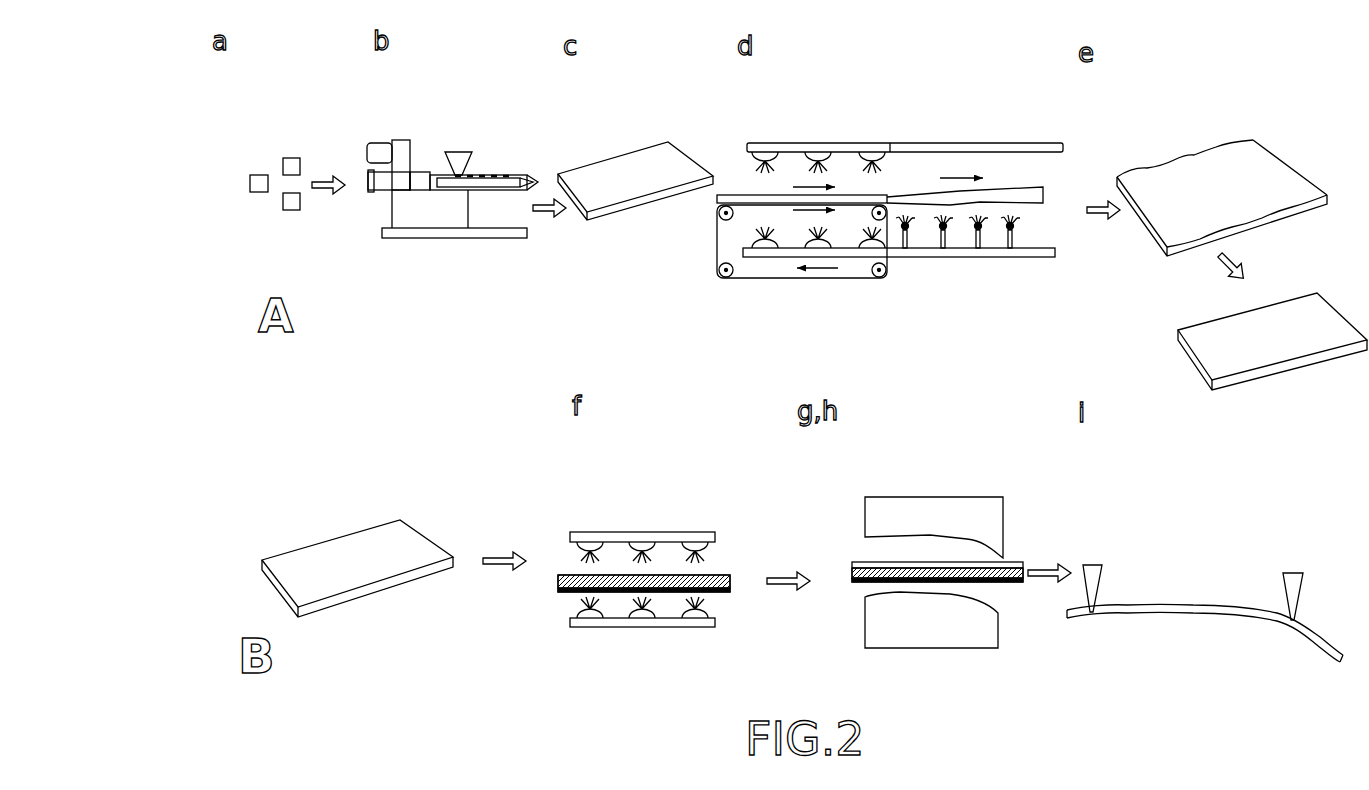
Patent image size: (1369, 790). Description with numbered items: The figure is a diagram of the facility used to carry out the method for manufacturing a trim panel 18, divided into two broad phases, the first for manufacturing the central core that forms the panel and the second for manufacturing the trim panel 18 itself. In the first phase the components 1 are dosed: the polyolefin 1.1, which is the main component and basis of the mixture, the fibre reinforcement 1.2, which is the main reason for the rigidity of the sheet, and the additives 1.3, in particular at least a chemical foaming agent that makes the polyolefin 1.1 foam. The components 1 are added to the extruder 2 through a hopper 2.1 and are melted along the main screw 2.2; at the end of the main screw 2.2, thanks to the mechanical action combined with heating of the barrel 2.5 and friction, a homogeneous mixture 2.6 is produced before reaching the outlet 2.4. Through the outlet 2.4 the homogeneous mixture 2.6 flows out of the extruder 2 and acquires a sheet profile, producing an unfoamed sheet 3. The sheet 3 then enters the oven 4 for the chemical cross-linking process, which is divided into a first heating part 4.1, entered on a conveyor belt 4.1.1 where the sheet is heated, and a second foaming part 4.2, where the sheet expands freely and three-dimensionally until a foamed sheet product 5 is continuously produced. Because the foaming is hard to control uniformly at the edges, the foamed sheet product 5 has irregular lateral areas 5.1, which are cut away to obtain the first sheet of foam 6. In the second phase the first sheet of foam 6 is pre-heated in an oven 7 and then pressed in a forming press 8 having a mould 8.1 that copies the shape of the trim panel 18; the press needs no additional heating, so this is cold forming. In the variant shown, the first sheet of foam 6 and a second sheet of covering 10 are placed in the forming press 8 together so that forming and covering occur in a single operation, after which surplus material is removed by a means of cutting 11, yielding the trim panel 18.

The components 1 is at (295, 163).
The polyolefin 1.1 is at (259, 192).
The fibre reinforcement 1.2 is at (291, 158).
The additives 1.3 is at (292, 210).
The extruder 2 is at (493, 219).
The hopper 2.1 is at (458, 152).
The main screw 2.2 is at (442, 182).
The outlet 2.4 is at (538, 182).
The barrel 2.5 is at (498, 192).
The homogeneous mixture 2.6 is at (535, 180).
The sheet 3 is at (597, 223).
The oven 4 is at (835, 155).
The first heating part 4.1 is at (795, 160).
The conveyor belt 4.1.1 is at (717, 237).
The second foaming part 4.2 is at (918, 170).
The foamed sheet product 5 is at (1216, 162).
The irregular lateral areas 5.1 is at (1215, 220).
The first sheet of foam 6 is at (1178, 320).
The oven 7 is at (635, 512).
The forming press 8 is at (880, 515).
The mould 8.1 is at (872, 618).
The second sheet of covering 10 is at (948, 565).
The means of cutting 11 is at (1290, 577).
The trim panel 18 is at (1177, 578).